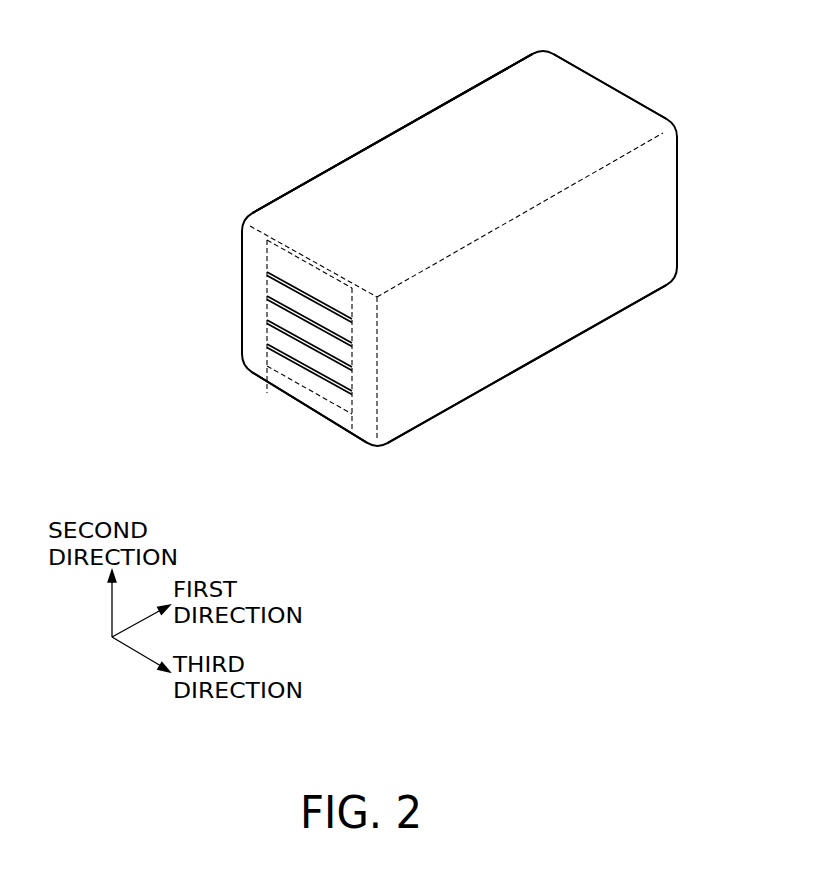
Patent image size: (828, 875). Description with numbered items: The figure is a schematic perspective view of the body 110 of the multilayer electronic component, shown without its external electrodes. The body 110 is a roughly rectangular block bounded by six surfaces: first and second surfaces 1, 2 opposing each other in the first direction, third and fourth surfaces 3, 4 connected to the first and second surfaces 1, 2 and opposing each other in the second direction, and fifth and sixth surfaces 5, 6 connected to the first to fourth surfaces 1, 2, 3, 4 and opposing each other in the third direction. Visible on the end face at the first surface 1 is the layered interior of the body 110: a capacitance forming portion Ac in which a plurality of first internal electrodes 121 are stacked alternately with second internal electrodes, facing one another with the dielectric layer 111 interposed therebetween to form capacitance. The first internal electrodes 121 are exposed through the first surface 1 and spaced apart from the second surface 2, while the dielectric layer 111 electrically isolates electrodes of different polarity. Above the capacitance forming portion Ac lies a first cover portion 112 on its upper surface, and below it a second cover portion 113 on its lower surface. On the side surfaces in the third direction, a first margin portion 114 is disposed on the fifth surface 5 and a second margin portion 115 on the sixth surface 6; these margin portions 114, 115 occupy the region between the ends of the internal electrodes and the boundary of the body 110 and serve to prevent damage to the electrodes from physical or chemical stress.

The body 110 is at (275, 38).
The first surface 1 is at (284, 417).
The second surface 2 is at (645, 89).
The third surface 3 is at (454, 129).
The fourth surface 4 is at (489, 411).
The fifth surface 5 is at (287, 176).
The sixth surface 6 is at (556, 319).
The first cover portion 112 is at (283, 252).
The first internal electrode 121 is at (295, 287).
The dielectric layer 111 is at (278, 326).
The capacitance forming portion Ac is at (373, 376).
The first margin portion 114 is at (254, 368).
The second cover portion 113 is at (287, 388).
The second margin portion 115 is at (366, 428).